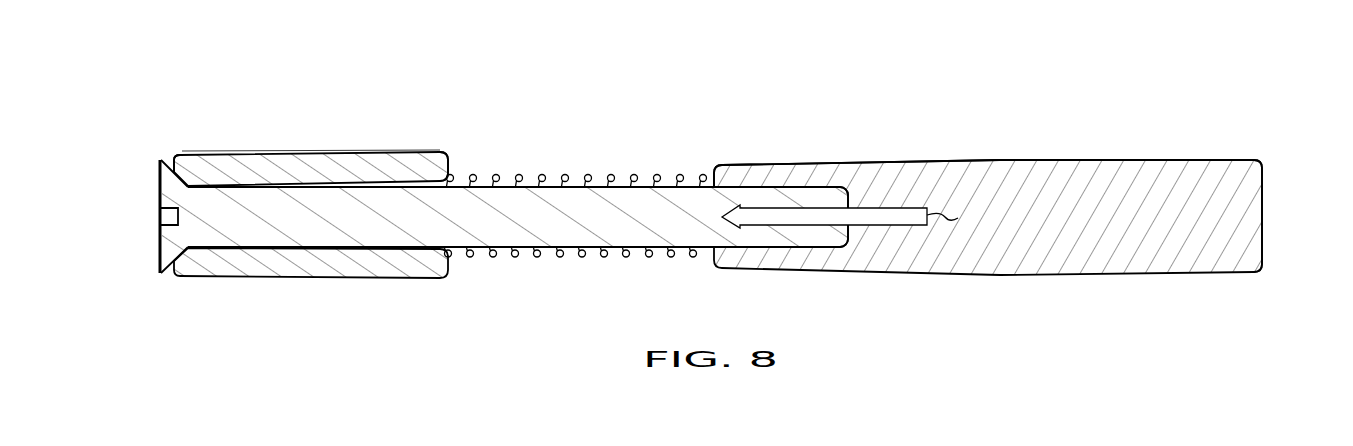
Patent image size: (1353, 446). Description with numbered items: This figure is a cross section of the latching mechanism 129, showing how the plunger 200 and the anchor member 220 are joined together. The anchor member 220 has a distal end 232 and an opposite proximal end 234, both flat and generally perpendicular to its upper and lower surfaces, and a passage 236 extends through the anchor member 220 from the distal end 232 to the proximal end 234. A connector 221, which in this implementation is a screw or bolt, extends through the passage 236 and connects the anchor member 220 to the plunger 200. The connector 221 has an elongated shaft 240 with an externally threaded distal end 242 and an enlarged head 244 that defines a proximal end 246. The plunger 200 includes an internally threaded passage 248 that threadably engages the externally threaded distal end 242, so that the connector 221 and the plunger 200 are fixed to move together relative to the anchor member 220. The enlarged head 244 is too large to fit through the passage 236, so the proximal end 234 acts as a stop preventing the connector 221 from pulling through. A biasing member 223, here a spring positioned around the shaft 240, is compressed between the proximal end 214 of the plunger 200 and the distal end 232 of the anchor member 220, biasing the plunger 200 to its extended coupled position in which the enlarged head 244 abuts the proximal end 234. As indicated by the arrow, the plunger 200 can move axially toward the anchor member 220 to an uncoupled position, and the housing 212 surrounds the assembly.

The surgical instrument assembly 129 is at (1194, 104).
The plunger 200 is at (1126, 299).
The proximal end of housing 212 is at (1262, 207).
The proximal end of the plunger 214 is at (701, 177).
The anchor member 220 is at (285, 134).
The connector 221 is at (521, 232).
The biasing member 223 is at (578, 257).
The distal end 232 is at (446, 176).
The proximal end 234 is at (173, 157).
The passage 236 is at (237, 252).
The elongated shaft 240 is at (553, 198).
The externally threaded distal end 242 is at (791, 193).
The enlarged head 244 is at (160, 232).
The proximal end of the connector 246 is at (122, 198).
The internally threaded passage 248 is at (810, 238).